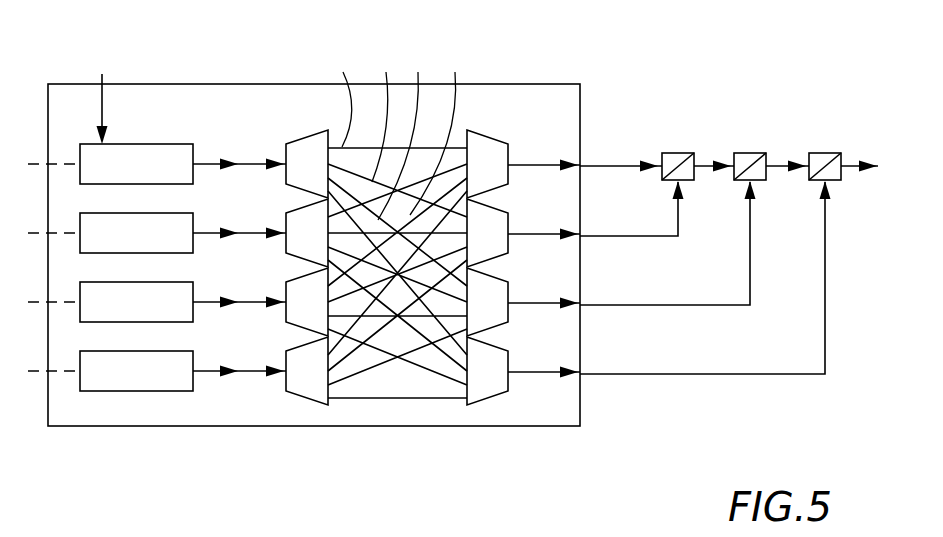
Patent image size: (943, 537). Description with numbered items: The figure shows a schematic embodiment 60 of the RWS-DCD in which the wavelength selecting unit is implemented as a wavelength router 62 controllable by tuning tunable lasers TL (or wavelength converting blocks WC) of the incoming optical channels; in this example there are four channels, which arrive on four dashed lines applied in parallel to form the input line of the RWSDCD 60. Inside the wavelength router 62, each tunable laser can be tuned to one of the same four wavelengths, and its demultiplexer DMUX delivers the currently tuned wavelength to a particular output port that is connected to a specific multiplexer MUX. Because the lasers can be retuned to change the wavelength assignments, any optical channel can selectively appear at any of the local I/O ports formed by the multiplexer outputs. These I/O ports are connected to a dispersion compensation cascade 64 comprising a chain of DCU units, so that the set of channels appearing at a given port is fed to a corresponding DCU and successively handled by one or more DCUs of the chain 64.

The RWS-DCD embodiment 60 is at (741, 96).
The wavelength router 62 is at (540, 107).
The dispersion compensation cascade 64 is at (784, 157).